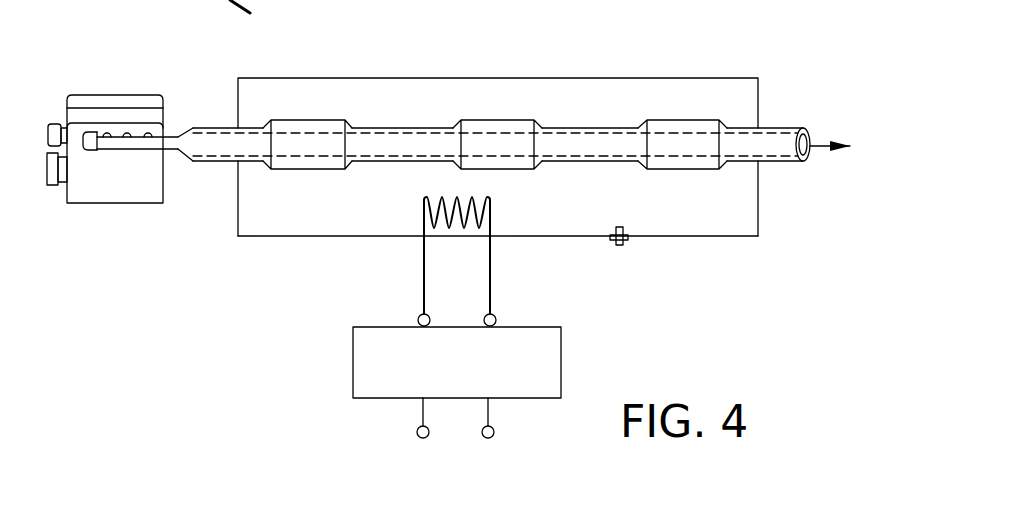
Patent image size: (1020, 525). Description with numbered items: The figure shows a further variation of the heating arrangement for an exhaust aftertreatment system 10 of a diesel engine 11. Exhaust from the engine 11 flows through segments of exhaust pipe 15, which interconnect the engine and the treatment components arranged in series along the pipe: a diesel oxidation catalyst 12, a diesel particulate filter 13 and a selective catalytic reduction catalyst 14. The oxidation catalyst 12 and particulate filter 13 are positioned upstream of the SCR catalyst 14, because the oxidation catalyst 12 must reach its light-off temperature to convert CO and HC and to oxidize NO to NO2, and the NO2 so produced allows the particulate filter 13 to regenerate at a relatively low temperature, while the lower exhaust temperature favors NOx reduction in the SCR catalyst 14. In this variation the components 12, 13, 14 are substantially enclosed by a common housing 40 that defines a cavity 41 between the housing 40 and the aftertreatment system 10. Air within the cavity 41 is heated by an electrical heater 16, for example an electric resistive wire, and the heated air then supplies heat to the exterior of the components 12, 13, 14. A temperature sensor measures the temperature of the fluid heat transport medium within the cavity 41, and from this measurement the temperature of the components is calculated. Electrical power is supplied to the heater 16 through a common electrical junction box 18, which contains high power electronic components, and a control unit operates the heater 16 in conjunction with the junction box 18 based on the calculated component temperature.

The exhaust aftertreatment system 10 is at (448, 229).
The diesel engine 11 is at (110, 113).
The diesel oxidation catalyst 12 is at (305, 119).
The diesel particulate filter 13 is at (497, 119).
The selective catalytic reduction catalyst 14 is at (680, 119).
The exhaust pipe 15 is at (218, 127).
The electrical heater 16 is at (425, 205).
The electrical junction box 18 is at (339, 372).
The housing 40 is at (237, 218).
The cavity 41 is at (300, 217).